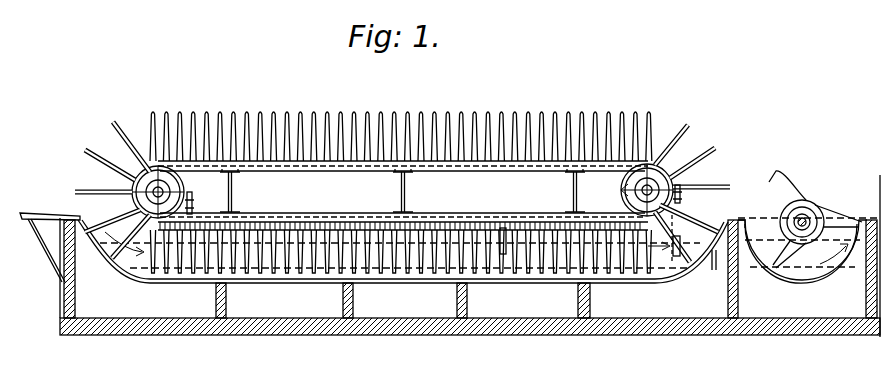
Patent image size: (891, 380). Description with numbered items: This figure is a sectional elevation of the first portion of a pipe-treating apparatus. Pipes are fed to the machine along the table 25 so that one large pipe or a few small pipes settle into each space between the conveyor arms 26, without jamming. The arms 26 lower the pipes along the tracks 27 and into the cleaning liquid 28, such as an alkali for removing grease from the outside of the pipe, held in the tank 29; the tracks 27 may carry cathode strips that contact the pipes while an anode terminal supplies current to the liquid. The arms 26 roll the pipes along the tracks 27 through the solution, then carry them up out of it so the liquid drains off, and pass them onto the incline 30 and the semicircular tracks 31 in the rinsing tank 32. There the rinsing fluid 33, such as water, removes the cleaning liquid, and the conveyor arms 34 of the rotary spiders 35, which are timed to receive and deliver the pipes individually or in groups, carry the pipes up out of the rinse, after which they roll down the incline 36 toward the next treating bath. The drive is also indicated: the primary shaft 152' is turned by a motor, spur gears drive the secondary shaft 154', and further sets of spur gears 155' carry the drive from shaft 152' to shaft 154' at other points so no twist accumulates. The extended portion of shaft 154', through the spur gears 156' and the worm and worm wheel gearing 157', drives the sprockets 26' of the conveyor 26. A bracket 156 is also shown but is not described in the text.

The table 25 is at (31, 212).
The conveyor arms 26 is at (422, 190).
The sprockets 26' is at (607, 190).
The tracks 27 is at (518, 279).
The cleaning liquid 28 is at (183, 308).
The tank 29 is at (68, 297).
The incline 30 is at (736, 224).
The semicircular tracks 31 is at (816, 275).
The rinsing tank 32 is at (770, 222).
The rinsing fluid 33 is at (791, 308).
The conveyor arms 34 is at (784, 180).
The rotary spiders 35 is at (812, 205).
The incline 36 is at (869, 220).
The primary shaft 152' is at (809, 262).
The secondary shaft 154' is at (400, 233).
The spur gears 155' is at (699, 260).
The bracket 156 is at (208, 199).
The spur gears 156' is at (707, 178).
The worm and worm wheel gearing 157' is at (400, 189).